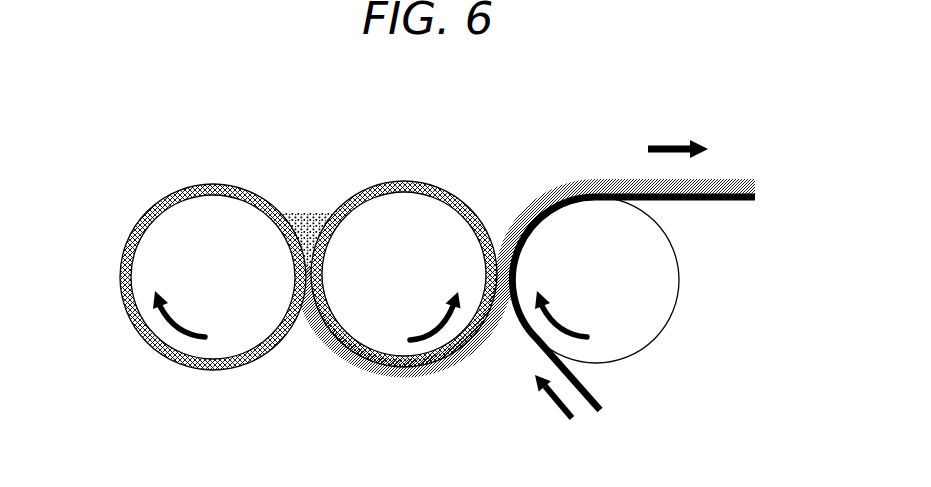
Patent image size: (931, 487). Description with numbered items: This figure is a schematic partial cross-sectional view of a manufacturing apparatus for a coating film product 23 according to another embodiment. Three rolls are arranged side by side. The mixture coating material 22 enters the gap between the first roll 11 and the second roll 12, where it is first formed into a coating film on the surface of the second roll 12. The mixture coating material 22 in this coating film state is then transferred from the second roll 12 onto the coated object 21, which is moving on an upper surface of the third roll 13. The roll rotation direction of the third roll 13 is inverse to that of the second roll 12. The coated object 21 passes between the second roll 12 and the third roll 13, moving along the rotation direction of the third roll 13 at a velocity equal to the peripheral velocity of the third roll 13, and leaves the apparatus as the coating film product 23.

The first roll 11 is at (192, 232).
The second roll 12 is at (433, 204).
The third roll 13 is at (660, 303).
The coated object 21 is at (602, 413).
The mixture coating material 22 is at (303, 198).
The coating film product 23 is at (518, 193).